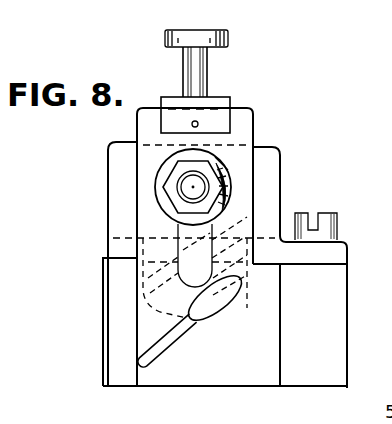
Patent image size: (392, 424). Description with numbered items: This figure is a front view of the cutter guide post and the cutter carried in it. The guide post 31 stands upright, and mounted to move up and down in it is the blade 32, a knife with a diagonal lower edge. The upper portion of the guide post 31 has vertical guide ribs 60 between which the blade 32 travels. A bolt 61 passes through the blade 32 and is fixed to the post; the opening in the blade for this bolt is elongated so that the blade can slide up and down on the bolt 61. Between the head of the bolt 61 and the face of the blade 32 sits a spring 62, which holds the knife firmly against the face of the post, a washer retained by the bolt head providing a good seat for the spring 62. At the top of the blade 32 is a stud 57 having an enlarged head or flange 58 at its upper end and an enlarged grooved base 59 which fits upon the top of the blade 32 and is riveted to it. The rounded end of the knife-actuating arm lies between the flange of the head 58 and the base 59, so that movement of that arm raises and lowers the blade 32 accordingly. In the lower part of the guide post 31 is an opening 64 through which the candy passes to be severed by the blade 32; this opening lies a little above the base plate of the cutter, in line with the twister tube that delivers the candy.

The guide post 31 is at (337, 333).
The blade 32 is at (145, 315).
The stud 57 is at (208, 75).
The head 58 is at (228, 37).
The grooved base 59 is at (230, 102).
The vertical guide ribs 60 is at (110, 208).
The bolt 61 is at (185, 182).
The spring 62 is at (230, 185).
The opening 64 is at (228, 302).